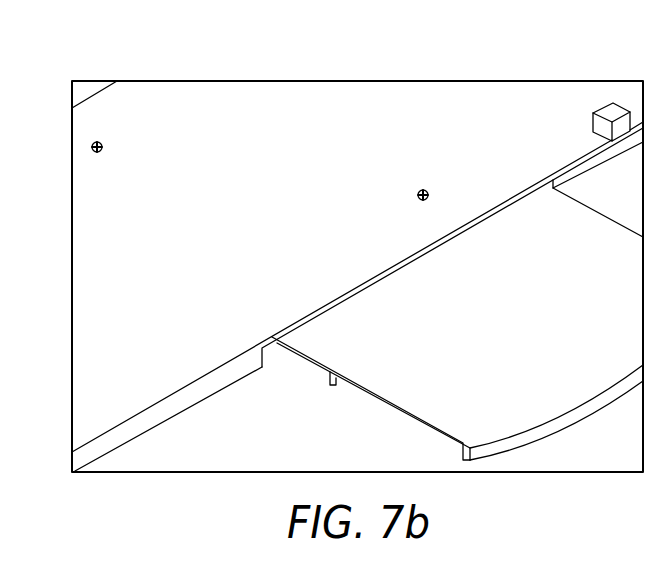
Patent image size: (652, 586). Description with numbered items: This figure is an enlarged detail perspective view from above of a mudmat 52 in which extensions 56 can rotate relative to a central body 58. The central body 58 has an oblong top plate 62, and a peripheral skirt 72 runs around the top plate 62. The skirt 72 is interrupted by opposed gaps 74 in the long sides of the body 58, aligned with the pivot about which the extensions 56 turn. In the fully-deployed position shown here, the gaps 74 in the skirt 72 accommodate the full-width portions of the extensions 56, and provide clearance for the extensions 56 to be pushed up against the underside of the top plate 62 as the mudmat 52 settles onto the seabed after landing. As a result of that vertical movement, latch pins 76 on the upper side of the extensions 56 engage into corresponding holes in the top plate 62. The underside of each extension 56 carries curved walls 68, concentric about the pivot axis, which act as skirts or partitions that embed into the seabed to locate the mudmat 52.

The mudmat 52 is at (150, 66).
The extension 56 is at (438, 398).
The central body 58 is at (103, 251).
The top plate 62 is at (533, 96).
The curved wall 68 is at (342, 384).
The peripheral skirt 72 is at (170, 408).
The gap 74 is at (270, 358).
The latch pin 76 is at (102, 143).